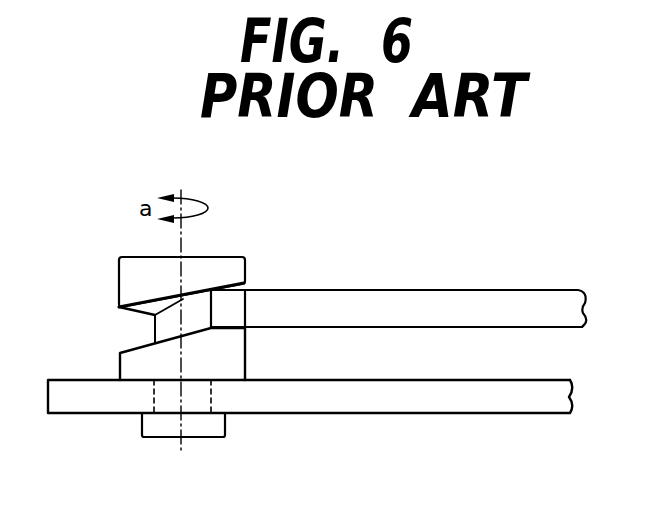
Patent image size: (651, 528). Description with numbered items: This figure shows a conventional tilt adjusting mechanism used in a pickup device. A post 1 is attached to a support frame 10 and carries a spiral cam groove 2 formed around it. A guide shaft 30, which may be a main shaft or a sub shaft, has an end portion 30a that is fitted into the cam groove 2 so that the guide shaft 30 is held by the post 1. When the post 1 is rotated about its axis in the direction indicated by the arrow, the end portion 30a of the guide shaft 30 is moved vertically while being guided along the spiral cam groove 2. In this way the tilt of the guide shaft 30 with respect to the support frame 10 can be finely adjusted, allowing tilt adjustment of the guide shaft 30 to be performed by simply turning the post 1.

The post 1 is at (204, 263).
The spiral cam groove 2 is at (137, 350).
The guide shaft 30 is at (403, 297).
The end portion 30a is at (232, 306).
The support frame 10 is at (387, 411).